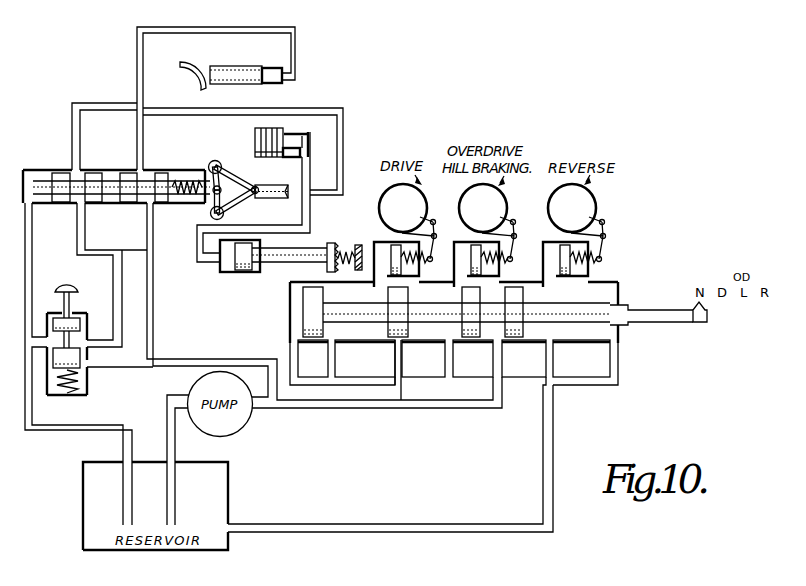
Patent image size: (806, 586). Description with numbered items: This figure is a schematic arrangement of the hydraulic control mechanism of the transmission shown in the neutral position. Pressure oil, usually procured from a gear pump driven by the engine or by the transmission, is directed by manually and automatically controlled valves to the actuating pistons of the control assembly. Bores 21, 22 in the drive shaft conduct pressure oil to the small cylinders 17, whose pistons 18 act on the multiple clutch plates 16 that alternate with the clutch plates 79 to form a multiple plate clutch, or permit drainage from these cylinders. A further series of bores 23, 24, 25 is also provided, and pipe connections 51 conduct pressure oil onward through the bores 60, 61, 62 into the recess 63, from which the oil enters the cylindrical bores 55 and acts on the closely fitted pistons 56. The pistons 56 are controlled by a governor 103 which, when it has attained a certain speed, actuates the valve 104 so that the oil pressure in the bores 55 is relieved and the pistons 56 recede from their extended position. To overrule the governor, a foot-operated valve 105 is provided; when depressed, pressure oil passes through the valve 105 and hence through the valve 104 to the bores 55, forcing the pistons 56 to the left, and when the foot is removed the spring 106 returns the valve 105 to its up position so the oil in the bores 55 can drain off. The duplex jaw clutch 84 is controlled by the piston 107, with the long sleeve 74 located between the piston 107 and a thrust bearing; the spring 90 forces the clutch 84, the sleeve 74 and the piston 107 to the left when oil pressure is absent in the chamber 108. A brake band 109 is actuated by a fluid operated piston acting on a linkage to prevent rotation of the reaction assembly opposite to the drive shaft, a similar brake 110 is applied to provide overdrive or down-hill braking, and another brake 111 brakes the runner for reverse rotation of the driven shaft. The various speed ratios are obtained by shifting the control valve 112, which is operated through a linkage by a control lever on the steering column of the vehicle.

The multiple clutch plates 16 is at (255, 135).
The small cylinders 17 is at (309, 140).
The pistons 18 is at (292, 150).
The bore 21 is at (344, 120).
The bore 22 is at (309, 173).
The bore 23 is at (222, 89).
The bore 24 is at (222, 89).
The bore 25 is at (222, 89).
The pipe connections 51 is at (222, 89).
The cylindrical bores 55 is at (274, 72).
The pistons 56 is at (230, 72).
The bore 60 is at (222, 89).
The bore 61 is at (222, 89).
The bore 62 is at (222, 89).
The recess 63 is at (133, 13).
The long sleeve 74 is at (313, 251).
The multiple clutch plates 79 is at (258, 155).
The duplex jaw clutch 84 is at (331, 242).
The spring 90 is at (358, 246).
The governor 103 is at (218, 161).
The valve 104 is at (95, 173).
The foot-operated valve 105 is at (67, 329).
The spring 106 is at (80, 382).
The piston 107 is at (244, 266).
The chamber 108 is at (231, 270).
The brake band 109 is at (427, 197).
The brake 110 is at (508, 199).
The brake 111 is at (598, 202).
The control valve 112 is at (622, 305).